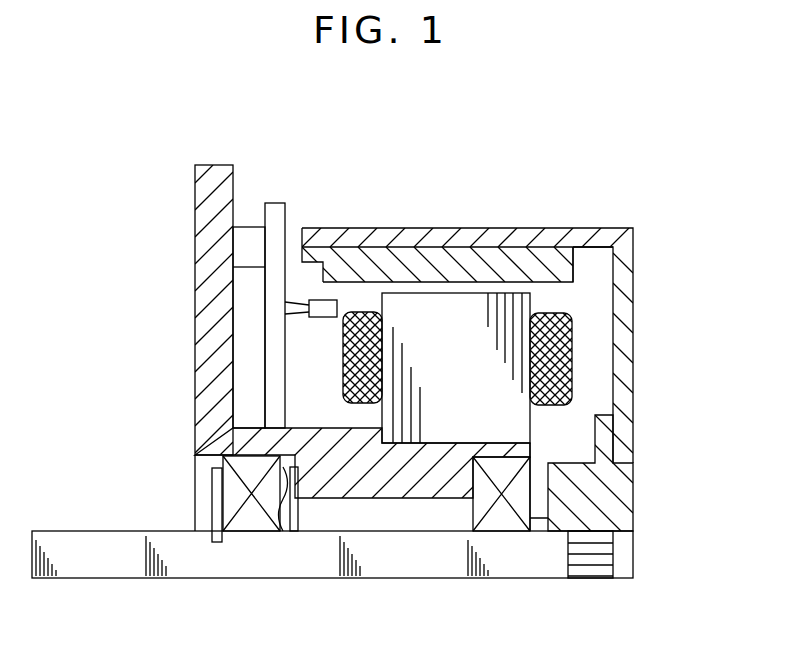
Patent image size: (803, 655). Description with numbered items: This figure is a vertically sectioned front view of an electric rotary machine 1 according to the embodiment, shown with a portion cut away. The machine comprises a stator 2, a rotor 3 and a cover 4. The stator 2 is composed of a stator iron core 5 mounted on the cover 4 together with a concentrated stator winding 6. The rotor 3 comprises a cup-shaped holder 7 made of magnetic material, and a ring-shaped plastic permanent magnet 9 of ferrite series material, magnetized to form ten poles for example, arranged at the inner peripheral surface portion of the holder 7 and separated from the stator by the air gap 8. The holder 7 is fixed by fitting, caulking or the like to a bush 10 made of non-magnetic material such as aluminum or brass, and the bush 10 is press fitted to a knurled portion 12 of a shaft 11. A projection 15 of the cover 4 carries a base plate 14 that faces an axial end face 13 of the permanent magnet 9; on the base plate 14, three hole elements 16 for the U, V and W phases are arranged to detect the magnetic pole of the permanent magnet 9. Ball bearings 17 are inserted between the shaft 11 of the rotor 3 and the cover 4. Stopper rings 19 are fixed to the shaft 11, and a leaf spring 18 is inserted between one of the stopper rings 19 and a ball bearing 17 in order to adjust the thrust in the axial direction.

The motor 1 is at (458, 191).
The stator 2 is at (373, 415).
The rotor 3 is at (432, 228).
The cover 4 is at (195, 286).
The stator iron core 5 is at (532, 300).
The concentrated stator winding 6 is at (572, 361).
The cup-shaped holder 7 is at (633, 256).
The air gap 8 is at (497, 292).
The permanent magnet 9 is at (560, 256).
The bush 10 is at (633, 488).
The shaft 11 is at (456, 580).
The knurled portion 12 is at (596, 580).
The axial end face 13 is at (296, 240).
The base plate 14 is at (279, 202).
The projection 15 is at (252, 226).
The hole elements 16 is at (328, 300).
The ball bearings 17 is at (248, 533).
The leaf spring 18 is at (284, 533).
The stopper rings 19 is at (210, 512).